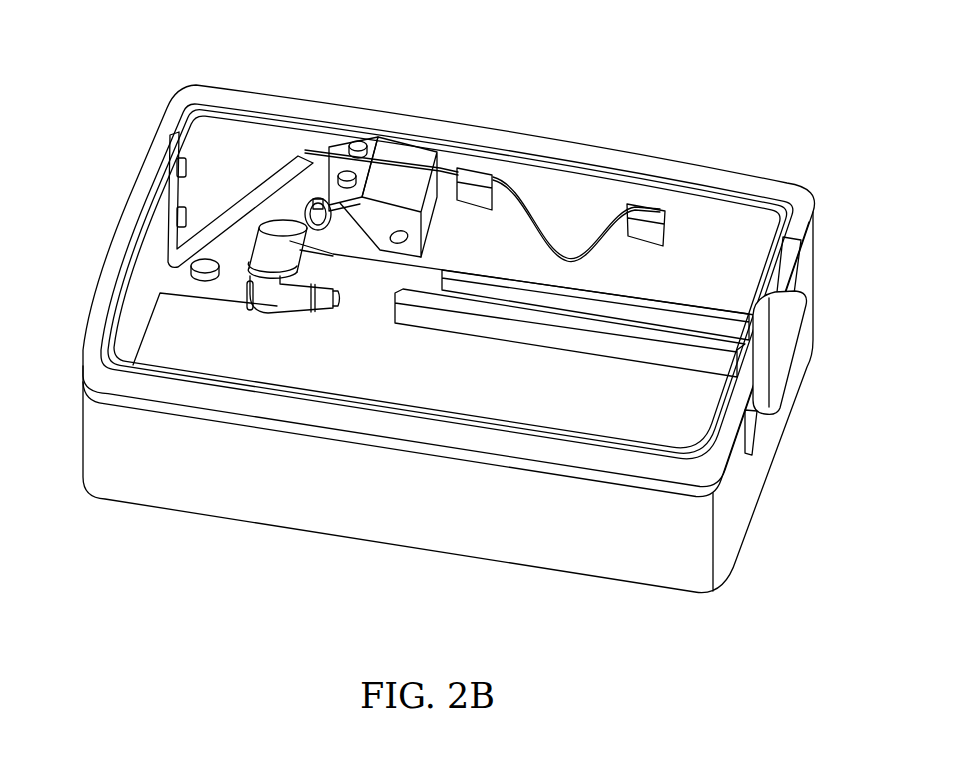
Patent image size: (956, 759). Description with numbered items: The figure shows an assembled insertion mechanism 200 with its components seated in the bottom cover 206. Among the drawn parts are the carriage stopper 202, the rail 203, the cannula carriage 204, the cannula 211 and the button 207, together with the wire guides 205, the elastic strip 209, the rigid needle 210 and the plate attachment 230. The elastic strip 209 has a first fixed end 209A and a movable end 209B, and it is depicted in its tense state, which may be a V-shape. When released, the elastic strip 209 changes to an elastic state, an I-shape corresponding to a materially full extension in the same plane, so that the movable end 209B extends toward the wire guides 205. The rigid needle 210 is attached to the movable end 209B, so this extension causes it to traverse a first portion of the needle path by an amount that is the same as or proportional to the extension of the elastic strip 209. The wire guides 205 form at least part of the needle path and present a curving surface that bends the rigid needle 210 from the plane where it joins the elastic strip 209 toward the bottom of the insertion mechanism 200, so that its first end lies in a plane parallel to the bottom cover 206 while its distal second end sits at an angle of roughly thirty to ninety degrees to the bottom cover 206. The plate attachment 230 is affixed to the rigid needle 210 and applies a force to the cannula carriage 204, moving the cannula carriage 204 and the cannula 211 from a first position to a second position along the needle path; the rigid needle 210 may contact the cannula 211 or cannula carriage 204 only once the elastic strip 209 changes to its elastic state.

The insertion mechanism 200 is at (758, 80).
The carriage stopper 202 is at (378, 135).
The rail 203 is at (223, 240).
The cannula carriage 204 is at (278, 246).
The wire guide 205 is at (395, 188).
The bottom cover 206 is at (386, 515).
The button 207 is at (790, 357).
The elastic strip 209 is at (562, 250).
The first fixed end 209A is at (654, 203).
The movable end 209B is at (490, 178).
The rigid needle 210 is at (450, 172).
The cannula 211 is at (212, 280).
The plate attachment 230 is at (312, 222).